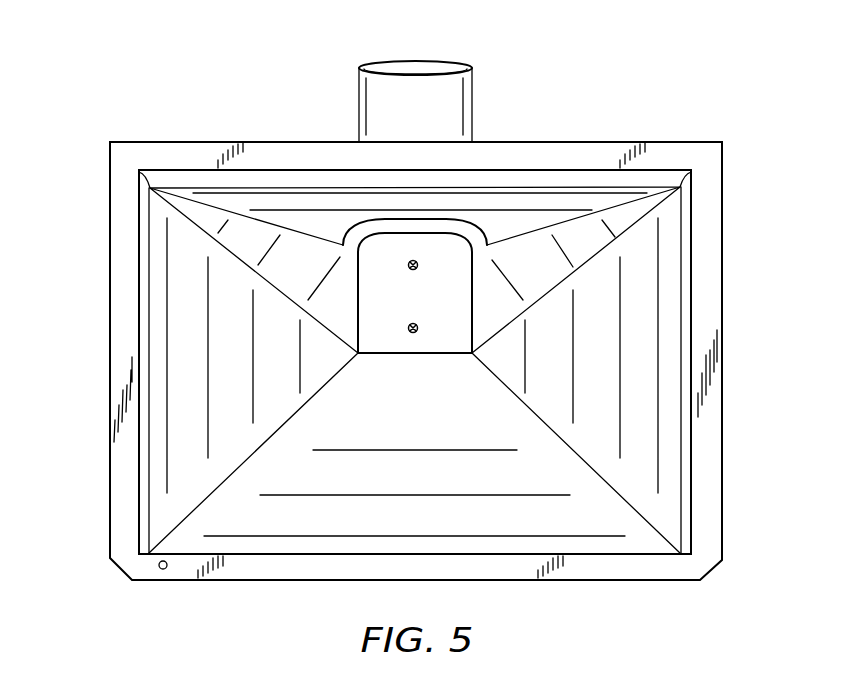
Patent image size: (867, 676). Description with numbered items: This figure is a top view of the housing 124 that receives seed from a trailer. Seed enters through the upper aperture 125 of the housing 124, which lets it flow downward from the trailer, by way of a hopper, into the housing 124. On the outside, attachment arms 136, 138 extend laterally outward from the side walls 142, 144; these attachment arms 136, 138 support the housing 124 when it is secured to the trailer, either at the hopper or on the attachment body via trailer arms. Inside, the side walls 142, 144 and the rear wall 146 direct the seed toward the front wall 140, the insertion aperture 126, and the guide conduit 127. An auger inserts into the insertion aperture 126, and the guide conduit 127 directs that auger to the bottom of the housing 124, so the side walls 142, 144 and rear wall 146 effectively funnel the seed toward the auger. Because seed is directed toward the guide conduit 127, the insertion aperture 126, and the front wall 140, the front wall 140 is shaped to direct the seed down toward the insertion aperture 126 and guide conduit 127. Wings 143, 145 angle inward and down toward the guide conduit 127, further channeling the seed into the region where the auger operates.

The housing 124 is at (126, 461).
The upper aperture 125 is at (590, 523).
The insertion aperture 126 is at (422, 63).
The guide conduit 127 is at (468, 98).
The attachment arm 136 is at (707, 460).
The attachment arm 138 is at (126, 168).
The front wall 140 is at (527, 202).
The side wall 142 is at (185, 335).
The wing 143 is at (260, 243).
The side wall 144 is at (643, 322).
The wing 145 is at (626, 217).
The rear wall 146 is at (315, 523).